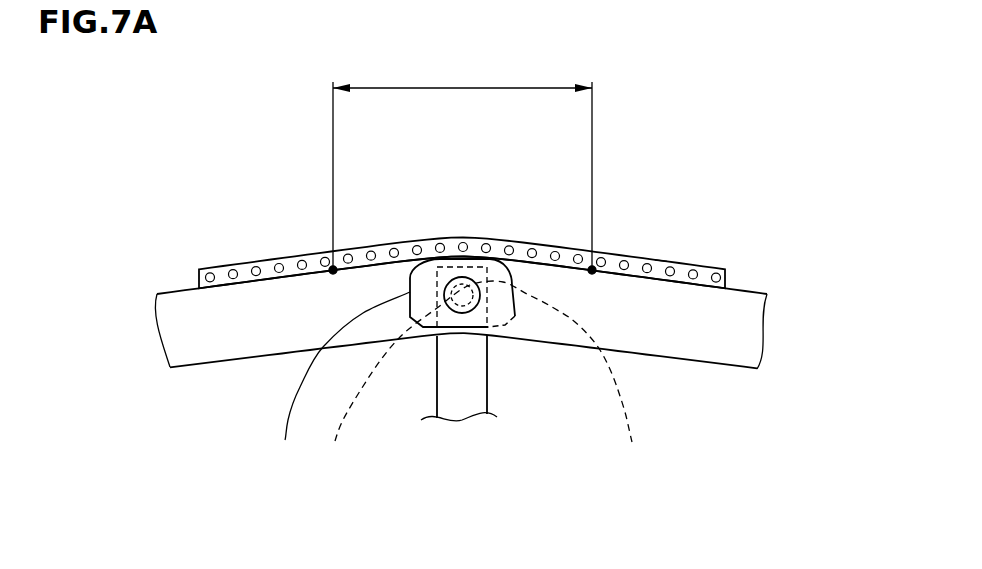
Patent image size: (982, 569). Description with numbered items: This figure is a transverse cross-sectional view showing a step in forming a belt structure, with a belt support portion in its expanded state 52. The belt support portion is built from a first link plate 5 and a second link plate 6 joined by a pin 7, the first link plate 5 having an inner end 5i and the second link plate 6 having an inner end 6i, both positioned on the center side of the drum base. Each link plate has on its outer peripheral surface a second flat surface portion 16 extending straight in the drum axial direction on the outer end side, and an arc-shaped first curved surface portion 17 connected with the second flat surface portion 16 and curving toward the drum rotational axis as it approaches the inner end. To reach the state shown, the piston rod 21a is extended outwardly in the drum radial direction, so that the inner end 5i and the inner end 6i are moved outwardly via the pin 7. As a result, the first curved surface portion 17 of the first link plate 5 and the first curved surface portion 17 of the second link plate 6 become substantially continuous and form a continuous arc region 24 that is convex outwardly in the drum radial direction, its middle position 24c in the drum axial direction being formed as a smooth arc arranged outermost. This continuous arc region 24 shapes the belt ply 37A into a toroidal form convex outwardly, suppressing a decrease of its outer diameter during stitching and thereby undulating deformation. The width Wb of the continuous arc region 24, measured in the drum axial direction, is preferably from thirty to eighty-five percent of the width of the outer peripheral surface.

The first link plate 5 is at (217, 332).
The second link plate 6 is at (733, 320).
The inner end of the first link plate 5i is at (600, 350).
The inner end of the second link plate 6i is at (288, 420).
The pin 7 is at (343, 420).
The second flat surface portion 16 is at (182, 283).
The first curved surface portion 17 is at (405, 257).
The piston rod 21a is at (460, 378).
The continuous arc region 24 is at (523, 258).
The middle position of the continuous arc region 24c is at (462, 259).
The belt ply 37A is at (663, 256).
The expanded state 52 is at (275, 165).
The width of the continuous arc region Wb is at (462, 167).